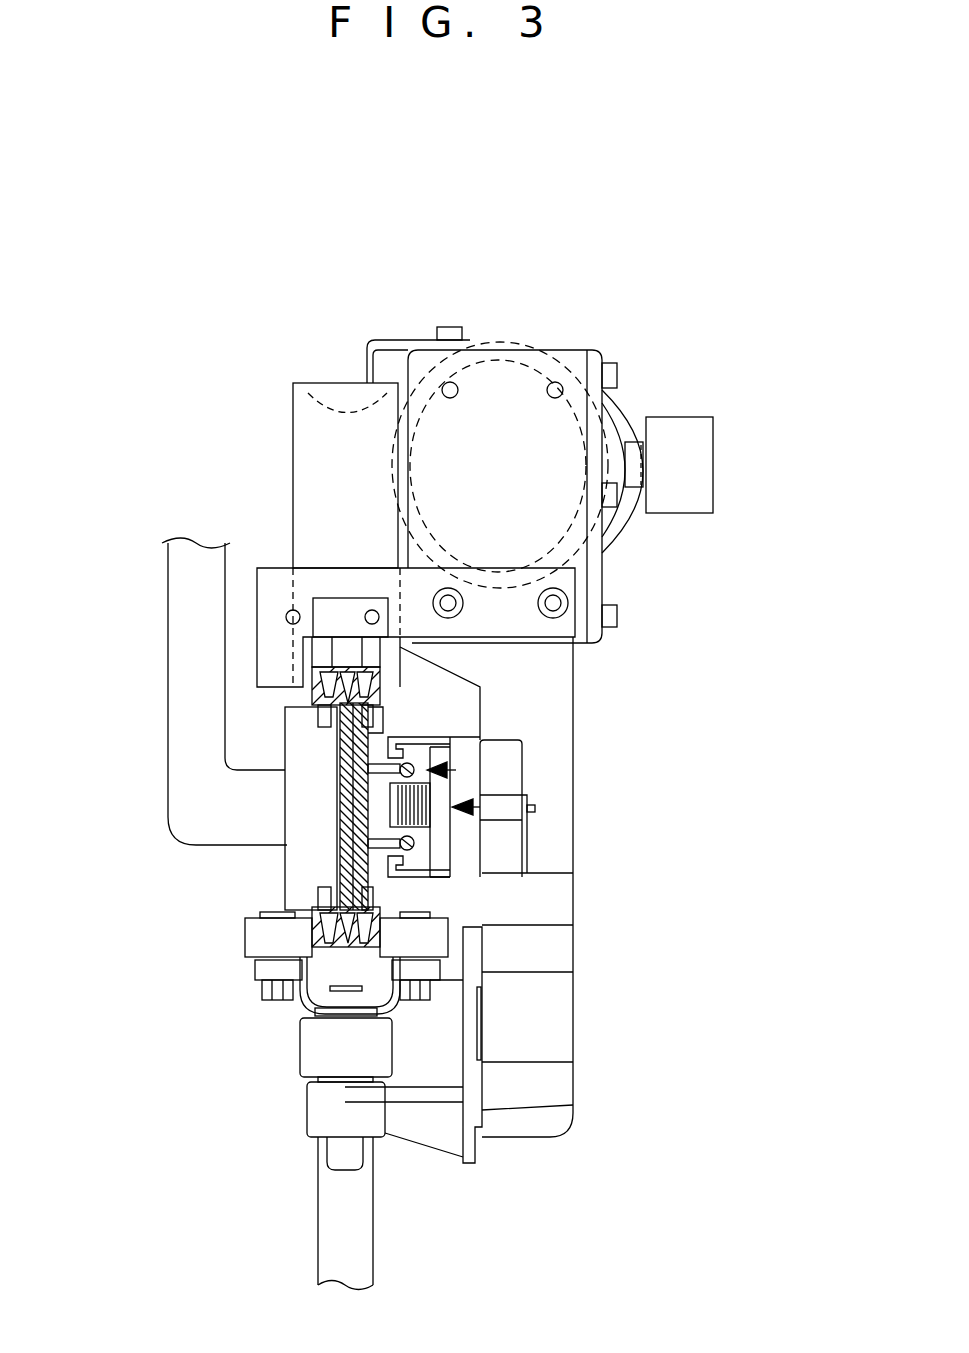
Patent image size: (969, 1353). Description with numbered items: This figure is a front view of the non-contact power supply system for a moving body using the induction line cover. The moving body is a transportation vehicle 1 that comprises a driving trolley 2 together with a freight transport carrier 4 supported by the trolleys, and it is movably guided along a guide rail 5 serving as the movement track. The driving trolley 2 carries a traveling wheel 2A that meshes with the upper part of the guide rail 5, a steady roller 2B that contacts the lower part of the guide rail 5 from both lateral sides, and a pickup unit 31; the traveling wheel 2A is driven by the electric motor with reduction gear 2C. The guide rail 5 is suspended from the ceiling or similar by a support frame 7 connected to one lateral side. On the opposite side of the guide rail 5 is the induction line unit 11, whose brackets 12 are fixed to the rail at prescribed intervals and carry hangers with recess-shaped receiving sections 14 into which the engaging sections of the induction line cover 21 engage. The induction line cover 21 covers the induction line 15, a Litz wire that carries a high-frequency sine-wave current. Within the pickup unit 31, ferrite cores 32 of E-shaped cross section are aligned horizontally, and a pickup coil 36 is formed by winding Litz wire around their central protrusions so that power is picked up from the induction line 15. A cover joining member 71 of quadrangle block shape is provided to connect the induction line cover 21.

The transportation vehicle 1 is at (722, 545).
The driving trolley 2 is at (563, 842).
The traveling wheel 2A is at (297, 687).
The steady roller 2B is at (245, 940).
The electric motor with reduction gear 2C is at (620, 405).
The freight transport carrier 4 is at (302, 1246).
The guide rail 5 is at (383, 677).
The support frame 7 is at (180, 650).
The induction line unit 11 is at (480, 767).
The bracket 12 is at (363, 807).
The receiving section 14 is at (400, 770).
The induction line 15 is at (407, 765).
The induction line cover 21 is at (392, 742).
The pickup unit 31 is at (530, 808).
The ferrite core 32 is at (442, 822).
The pickup coil 36 is at (412, 845).
The cover joining member 71 is at (382, 850).